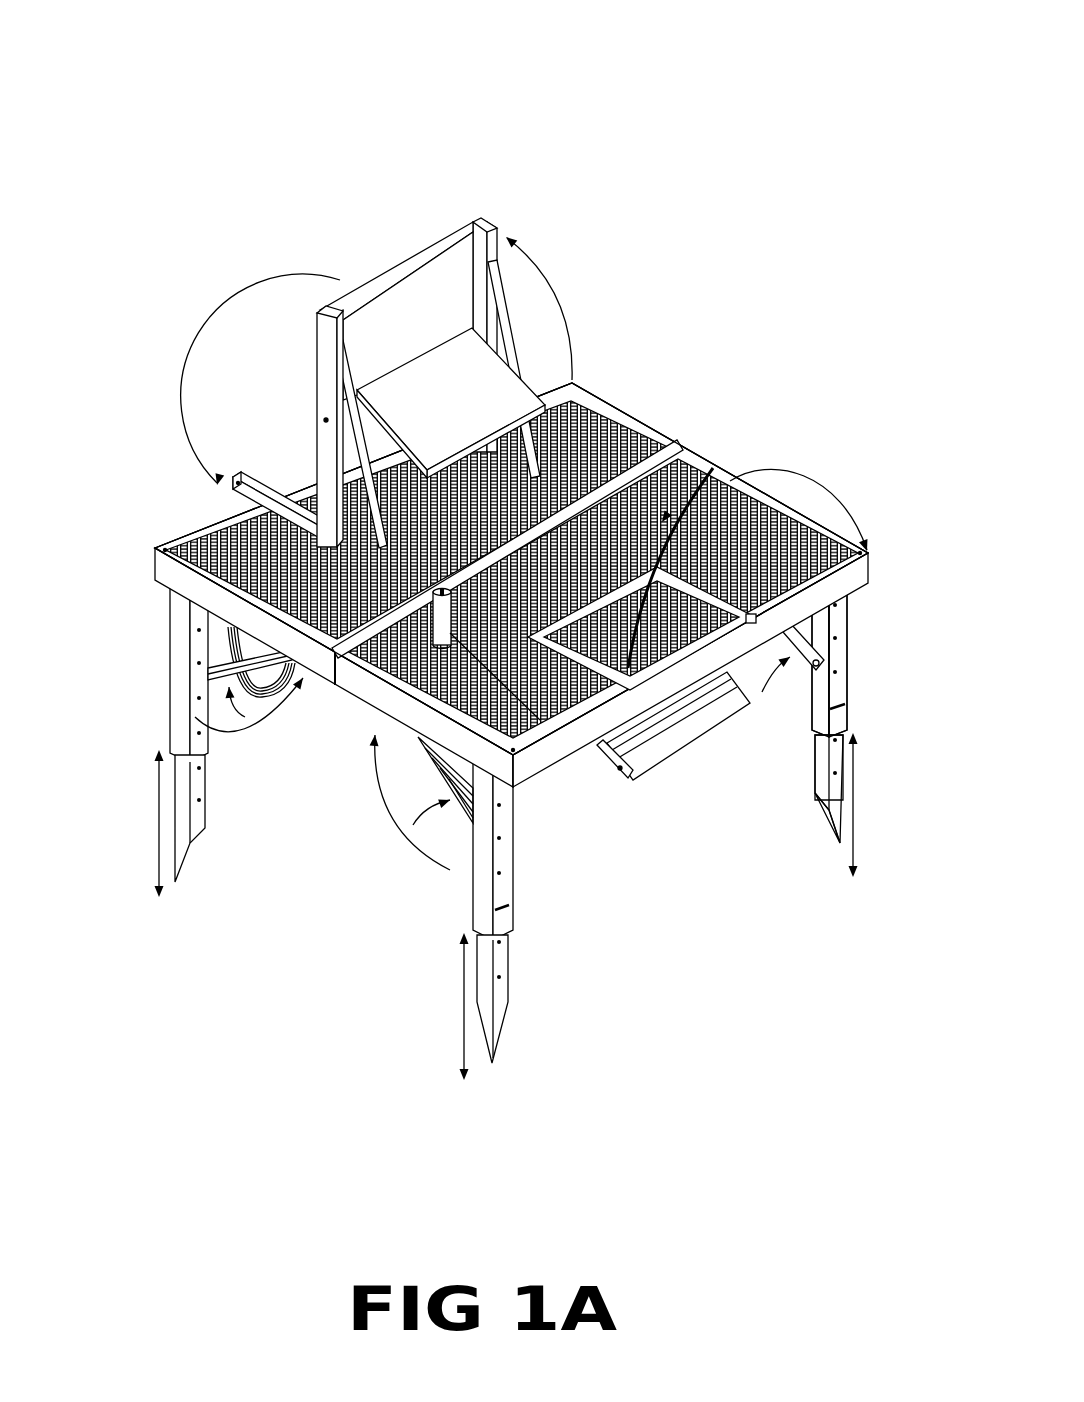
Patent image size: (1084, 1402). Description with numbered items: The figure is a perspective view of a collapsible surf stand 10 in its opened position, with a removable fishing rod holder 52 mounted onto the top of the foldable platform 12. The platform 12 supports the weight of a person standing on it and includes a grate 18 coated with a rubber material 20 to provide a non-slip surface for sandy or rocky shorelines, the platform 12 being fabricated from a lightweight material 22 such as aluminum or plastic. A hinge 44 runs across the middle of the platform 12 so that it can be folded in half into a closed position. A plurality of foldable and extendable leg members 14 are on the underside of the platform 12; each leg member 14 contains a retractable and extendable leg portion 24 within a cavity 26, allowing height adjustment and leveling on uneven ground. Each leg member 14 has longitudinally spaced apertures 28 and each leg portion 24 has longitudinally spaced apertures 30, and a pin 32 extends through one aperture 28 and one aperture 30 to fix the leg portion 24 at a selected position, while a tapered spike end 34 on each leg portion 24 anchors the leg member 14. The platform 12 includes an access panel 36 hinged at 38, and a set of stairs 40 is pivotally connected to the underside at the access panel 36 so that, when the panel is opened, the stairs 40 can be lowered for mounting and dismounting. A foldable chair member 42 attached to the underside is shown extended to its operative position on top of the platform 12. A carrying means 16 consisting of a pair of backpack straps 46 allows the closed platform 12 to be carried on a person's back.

The collapsible surf stand 10 is at (550, 132).
The foldable platform 12 is at (614, 400).
The leg member 14 is at (856, 710).
The carrying means 16 is at (264, 705).
The grate 18 is at (652, 433).
The rubber material 20 is at (712, 466).
The lightweight material 22 is at (578, 375).
The leg portion 24 is at (840, 745).
The cavity 26 is at (815, 745).
The aperture 28 is at (842, 612).
The aperture 30 is at (838, 790).
The pin 32 is at (835, 708).
The tapered spike end 34 is at (852, 835).
The access panel 36 is at (660, 690).
The hinge 38 is at (752, 622).
The set of stairs 40 is at (627, 757).
The foldable chair member 42 is at (417, 283).
The hinge 44 is at (337, 675).
The backpack straps 46 is at (227, 647).
The removable fishing rod holder 52 is at (540, 720).